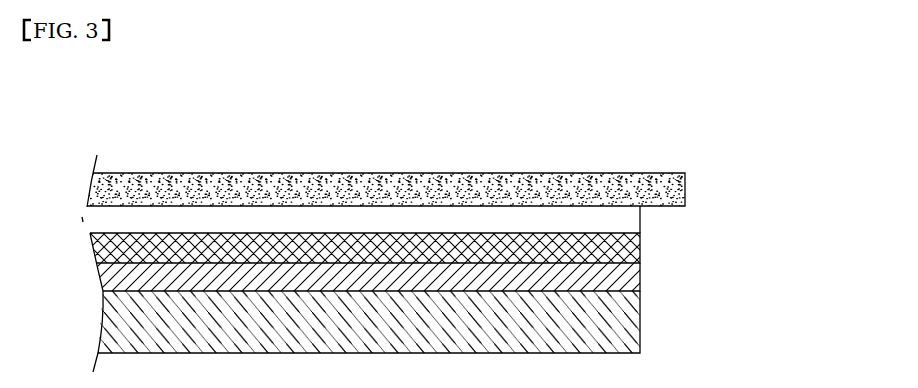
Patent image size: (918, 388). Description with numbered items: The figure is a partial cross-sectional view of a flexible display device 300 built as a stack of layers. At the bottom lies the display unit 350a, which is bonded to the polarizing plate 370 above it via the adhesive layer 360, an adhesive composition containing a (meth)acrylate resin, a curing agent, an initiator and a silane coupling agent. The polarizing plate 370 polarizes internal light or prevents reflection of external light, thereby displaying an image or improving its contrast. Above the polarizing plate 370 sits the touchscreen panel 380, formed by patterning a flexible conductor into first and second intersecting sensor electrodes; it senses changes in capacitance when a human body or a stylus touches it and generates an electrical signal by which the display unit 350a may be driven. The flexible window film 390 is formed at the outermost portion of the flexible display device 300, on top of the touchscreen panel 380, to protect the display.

The flexible display device 300 is at (590, 151).
The flexible window film 390 is at (685, 187).
The touchscreen panel 380 is at (628, 222).
The polarizing plate 370 is at (628, 250).
The adhesive layer 360 is at (628, 278).
The display unit 350a is at (628, 315).